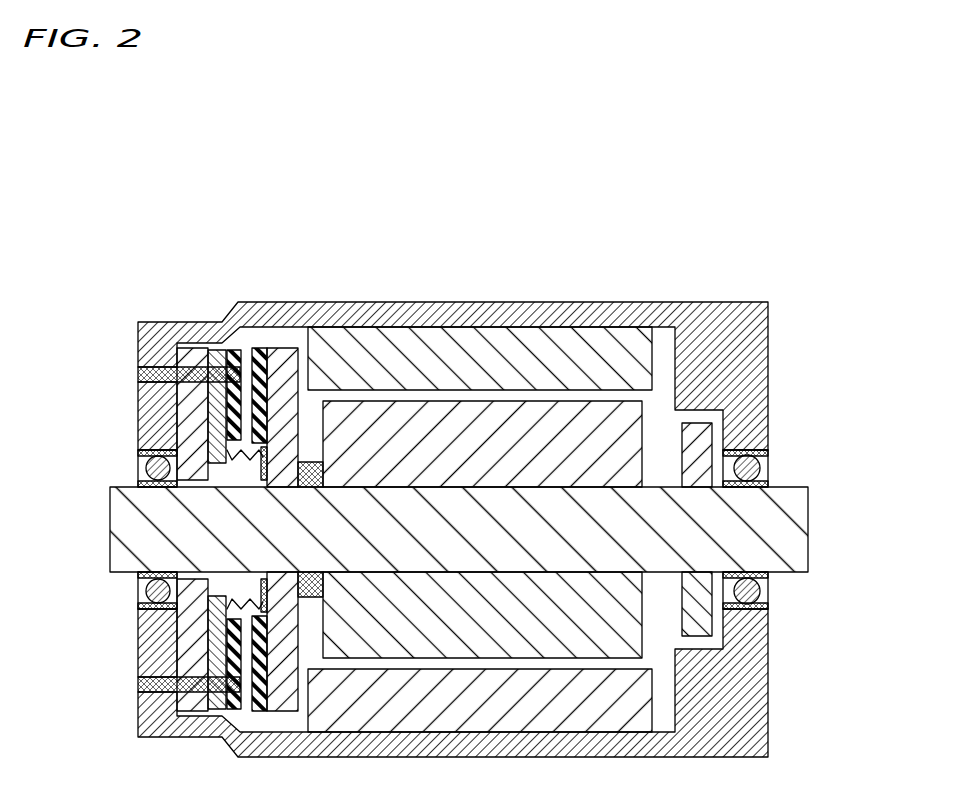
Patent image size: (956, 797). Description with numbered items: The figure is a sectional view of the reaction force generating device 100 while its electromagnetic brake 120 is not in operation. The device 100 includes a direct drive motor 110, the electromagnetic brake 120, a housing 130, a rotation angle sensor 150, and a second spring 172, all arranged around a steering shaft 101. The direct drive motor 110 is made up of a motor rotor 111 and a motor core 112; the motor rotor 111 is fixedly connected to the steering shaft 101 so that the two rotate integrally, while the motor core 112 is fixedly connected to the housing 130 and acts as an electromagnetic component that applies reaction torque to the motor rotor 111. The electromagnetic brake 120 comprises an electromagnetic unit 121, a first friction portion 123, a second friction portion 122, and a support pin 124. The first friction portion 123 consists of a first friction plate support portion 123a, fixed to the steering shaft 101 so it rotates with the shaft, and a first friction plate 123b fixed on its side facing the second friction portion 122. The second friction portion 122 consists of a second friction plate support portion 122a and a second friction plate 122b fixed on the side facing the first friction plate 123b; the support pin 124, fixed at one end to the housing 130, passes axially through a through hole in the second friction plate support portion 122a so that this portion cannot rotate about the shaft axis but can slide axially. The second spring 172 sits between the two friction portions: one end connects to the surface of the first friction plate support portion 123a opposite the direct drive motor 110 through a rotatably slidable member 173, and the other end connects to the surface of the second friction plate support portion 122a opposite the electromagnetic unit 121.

The reaction force generating device 100 is at (764, 201).
The steering shaft 101 is at (787, 521).
The direct drive motor 110 is at (540, 212).
The motor rotor 111 is at (382, 440).
The motor core 112 is at (438, 362).
The electromagnetic brake 120 is at (72, 97).
The electromagnetic unit 121 is at (192, 442).
The second friction portion 122 is at (128, 158).
The second friction plate support portion 122a is at (212, 412).
The second friction plate 122b is at (230, 393).
The first friction portion 123 is at (128, 85).
The first friction plate support portion 123a is at (285, 367).
The first friction plate 123b is at (261, 363).
The support pin 124 is at (162, 373).
The housing 130 is at (748, 375).
The rotation angle sensor 150 is at (703, 427).
The second spring 172 is at (267, 463).
The rotatably slidable member 173 is at (322, 463).